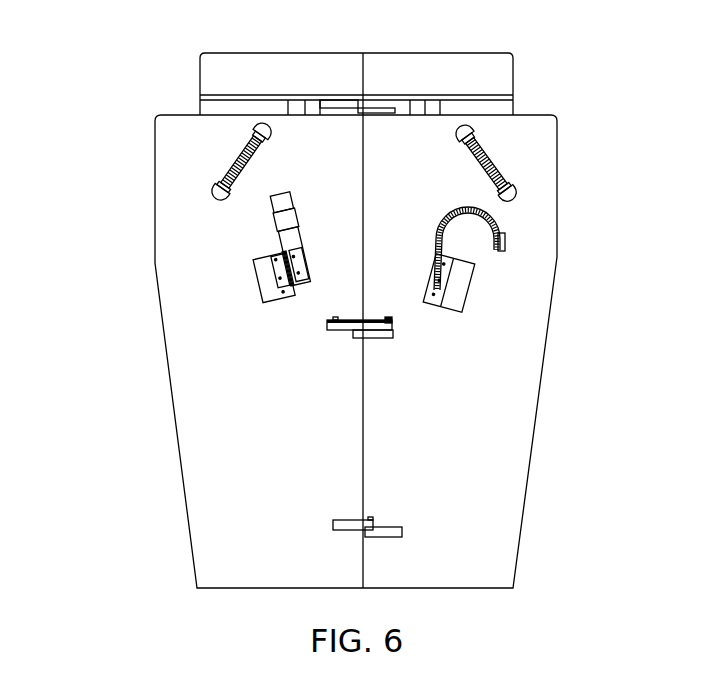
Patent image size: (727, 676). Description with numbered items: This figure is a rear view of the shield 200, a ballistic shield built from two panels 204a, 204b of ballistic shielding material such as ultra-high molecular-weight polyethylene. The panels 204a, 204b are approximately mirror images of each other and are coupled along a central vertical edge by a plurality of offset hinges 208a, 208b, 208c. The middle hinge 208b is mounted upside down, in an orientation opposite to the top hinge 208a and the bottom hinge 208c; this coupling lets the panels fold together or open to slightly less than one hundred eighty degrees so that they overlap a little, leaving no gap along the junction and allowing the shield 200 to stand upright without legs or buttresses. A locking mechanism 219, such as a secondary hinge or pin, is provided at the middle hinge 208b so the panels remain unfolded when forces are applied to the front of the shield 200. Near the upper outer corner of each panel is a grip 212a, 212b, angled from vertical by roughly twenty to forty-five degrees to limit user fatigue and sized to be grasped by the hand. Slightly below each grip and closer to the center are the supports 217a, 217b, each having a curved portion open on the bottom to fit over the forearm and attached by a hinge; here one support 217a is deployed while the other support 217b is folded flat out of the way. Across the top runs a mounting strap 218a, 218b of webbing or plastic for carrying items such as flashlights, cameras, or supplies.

The shield 200 is at (152, 46).
The panel 204a is at (215, 570).
The panel 204b is at (482, 563).
The offset hinge 208a is at (397, 112).
The offset hinge 208b is at (393, 334).
The offset hinge 208c is at (333, 522).
The grip 212a is at (487, 152).
The grip 212b is at (222, 165).
The support 217a is at (470, 266).
The support 217b is at (278, 246).
The mounting strap 218a is at (490, 110).
The mounting strap 218b is at (200, 107).
The locking mechanism 219 is at (392, 322).